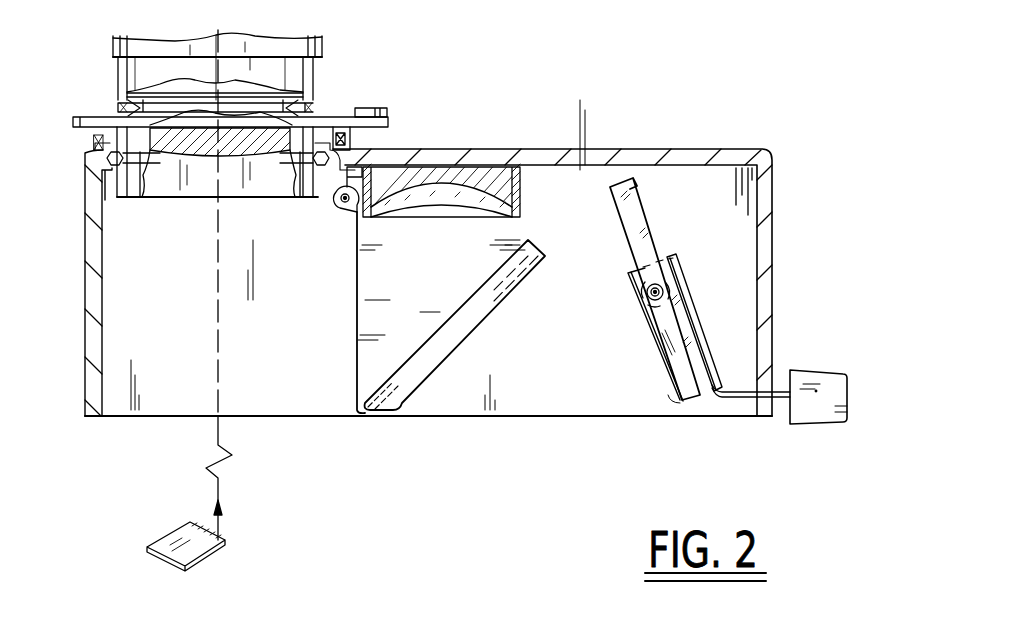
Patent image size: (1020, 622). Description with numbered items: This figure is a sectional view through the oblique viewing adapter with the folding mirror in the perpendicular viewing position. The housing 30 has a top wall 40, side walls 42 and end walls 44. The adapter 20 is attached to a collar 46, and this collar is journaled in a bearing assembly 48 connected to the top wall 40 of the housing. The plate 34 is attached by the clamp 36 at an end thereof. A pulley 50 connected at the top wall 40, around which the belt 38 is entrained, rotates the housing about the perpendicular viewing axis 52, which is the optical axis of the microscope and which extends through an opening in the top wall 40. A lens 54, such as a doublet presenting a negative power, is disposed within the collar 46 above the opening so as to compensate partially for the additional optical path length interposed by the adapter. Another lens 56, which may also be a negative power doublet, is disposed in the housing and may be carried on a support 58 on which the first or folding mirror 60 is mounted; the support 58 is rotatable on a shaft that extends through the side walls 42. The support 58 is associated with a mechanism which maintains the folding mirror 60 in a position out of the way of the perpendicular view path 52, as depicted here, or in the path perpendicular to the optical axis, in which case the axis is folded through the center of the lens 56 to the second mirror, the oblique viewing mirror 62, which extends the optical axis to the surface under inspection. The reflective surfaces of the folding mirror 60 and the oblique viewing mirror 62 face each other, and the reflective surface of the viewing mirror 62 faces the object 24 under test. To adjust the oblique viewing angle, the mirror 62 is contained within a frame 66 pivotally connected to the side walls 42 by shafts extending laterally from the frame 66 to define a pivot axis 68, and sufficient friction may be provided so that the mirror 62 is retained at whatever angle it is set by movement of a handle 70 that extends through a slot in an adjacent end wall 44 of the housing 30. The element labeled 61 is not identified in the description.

The adapter 20 is at (113, 43).
The object 24 is at (175, 524).
The housing 30 is at (772, 212).
The plate 34 is at (73, 123).
The clamp 36 is at (395, 108).
The belt 38 is at (345, 140).
The top wall 40 is at (717, 149).
The side walls 42 is at (486, 417).
The end walls 44 is at (84, 212).
The collar 46 is at (273, 93).
The bearing assembly 48 is at (316, 132).
The pulley 50 is at (95, 152).
The perpendicular viewing axis 52 is at (220, 385).
The lens 54 is at (198, 196).
The lens 56 is at (452, 210).
The support 58 is at (375, 290).
The folding mirror 60 is at (488, 298).
The hinge 61 is at (347, 210).
The oblique viewing mirror 62 is at (718, 396).
The frame 66 is at (673, 393).
The pivot axis 68 is at (655, 296).
The handle 70 is at (810, 370).